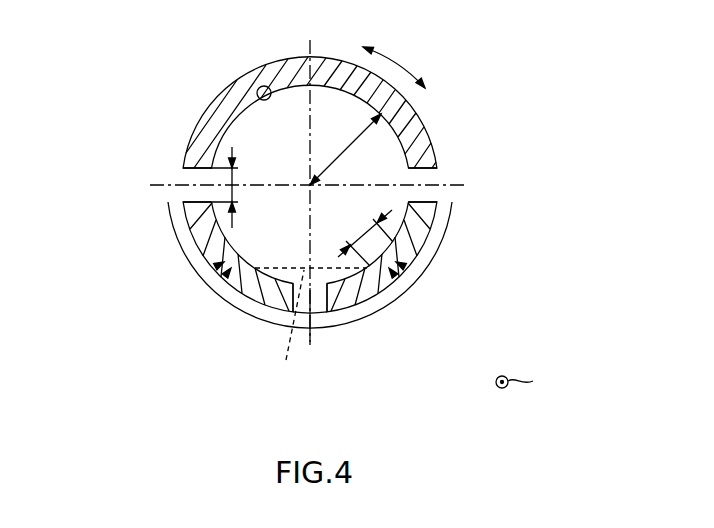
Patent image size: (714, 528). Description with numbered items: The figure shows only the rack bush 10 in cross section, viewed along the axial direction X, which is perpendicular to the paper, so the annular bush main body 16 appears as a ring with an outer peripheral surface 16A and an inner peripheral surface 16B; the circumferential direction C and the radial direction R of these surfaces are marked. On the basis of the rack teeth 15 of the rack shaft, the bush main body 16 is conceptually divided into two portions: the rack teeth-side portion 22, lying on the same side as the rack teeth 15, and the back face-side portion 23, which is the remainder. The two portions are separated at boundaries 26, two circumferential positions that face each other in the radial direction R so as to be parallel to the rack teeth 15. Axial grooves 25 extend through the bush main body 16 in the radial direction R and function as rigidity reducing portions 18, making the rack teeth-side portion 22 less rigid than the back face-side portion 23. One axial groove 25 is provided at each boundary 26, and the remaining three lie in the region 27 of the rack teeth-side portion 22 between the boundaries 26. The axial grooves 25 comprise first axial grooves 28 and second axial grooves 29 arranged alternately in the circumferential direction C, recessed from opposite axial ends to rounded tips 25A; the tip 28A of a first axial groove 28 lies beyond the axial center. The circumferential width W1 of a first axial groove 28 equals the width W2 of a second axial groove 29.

The rack bush 10 is at (328, 420).
The rack teeth 15 is at (288, 325).
The bush main body 16 is at (308, 92).
The outer peripheral surface 16A is at (215, 98).
The inner peripheral surface 16B is at (265, 86).
The rigidity reducing portion 18 is at (313, 264).
The rack teeth-side portion 22 is at (427, 238).
The back face-side portion 23 is at (420, 130).
The axial groove 25 is at (313, 264).
The tip 25A is at (308, 279).
The boundary 26 is at (437, 165).
The region 27 is at (266, 304).
The first axial groove 28 is at (312, 268).
The tip of first axial groove 28A is at (228, 272).
The second axial groove 29 is at (185, 181).
The radial direction R is at (344, 151).
The circumferential direction C is at (396, 60).
The width of first axial groove W1 is at (360, 245).
The width of second axial groove W2 is at (238, 178).
The axial direction X is at (522, 383).